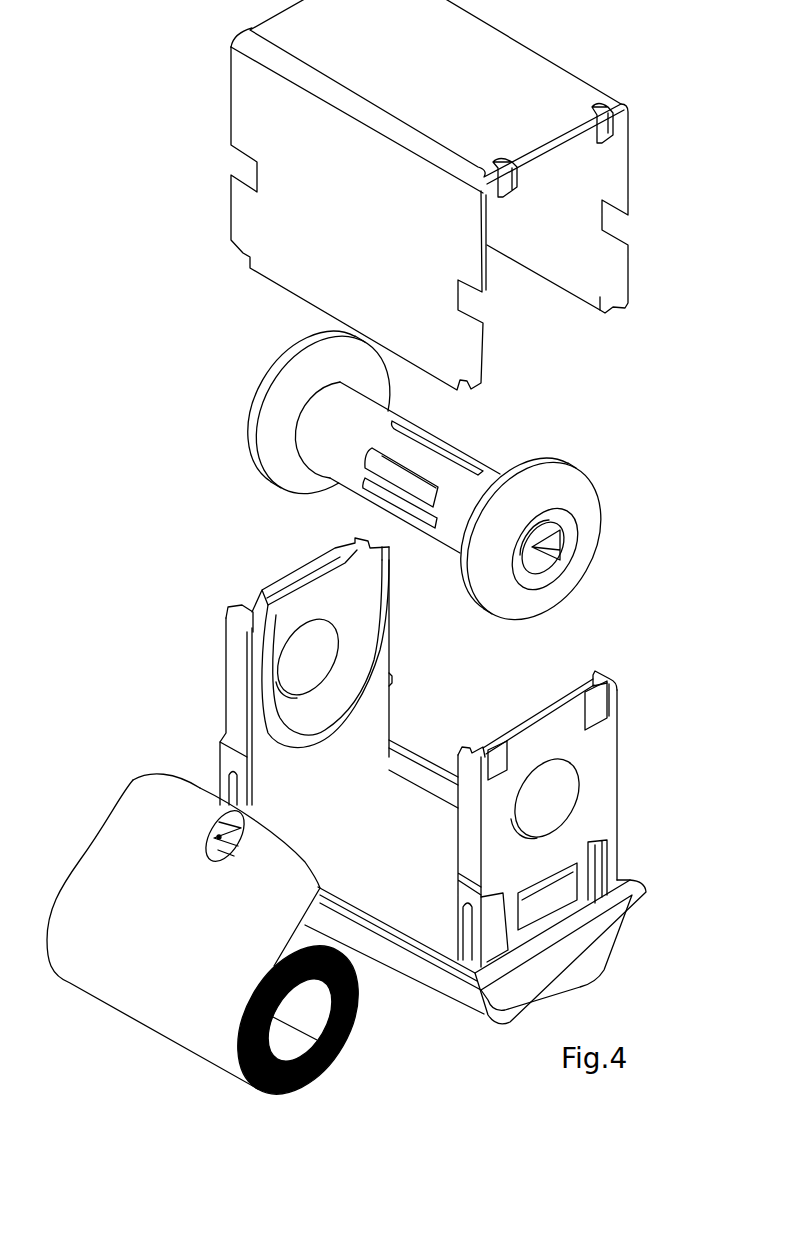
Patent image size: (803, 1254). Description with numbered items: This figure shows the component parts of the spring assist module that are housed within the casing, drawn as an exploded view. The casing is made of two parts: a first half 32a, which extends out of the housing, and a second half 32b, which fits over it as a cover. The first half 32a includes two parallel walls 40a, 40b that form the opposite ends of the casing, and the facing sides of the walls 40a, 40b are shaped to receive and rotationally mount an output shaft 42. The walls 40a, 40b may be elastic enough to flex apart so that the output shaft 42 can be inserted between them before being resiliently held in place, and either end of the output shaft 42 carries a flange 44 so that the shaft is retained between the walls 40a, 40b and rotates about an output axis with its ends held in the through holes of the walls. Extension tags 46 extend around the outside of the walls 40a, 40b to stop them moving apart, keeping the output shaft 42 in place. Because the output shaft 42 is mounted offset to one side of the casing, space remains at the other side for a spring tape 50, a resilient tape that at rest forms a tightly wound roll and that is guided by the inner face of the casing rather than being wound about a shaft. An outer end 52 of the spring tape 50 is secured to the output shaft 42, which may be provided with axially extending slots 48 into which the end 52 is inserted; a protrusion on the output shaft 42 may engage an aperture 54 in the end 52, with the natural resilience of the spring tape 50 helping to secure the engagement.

The second half 32b is at (511, 58).
The extension tags 46 is at (517, 181).
The output shaft 42 is at (488, 487).
The axially extending slots 48 is at (407, 468).
The flange 44 is at (272, 408).
The wall 40a is at (237, 666).
The wall 40b is at (600, 743).
The first half 32a is at (438, 978).
The spring tape 50 is at (115, 988).
The outer end 52 is at (147, 786).
The aperture 54 is at (217, 822).